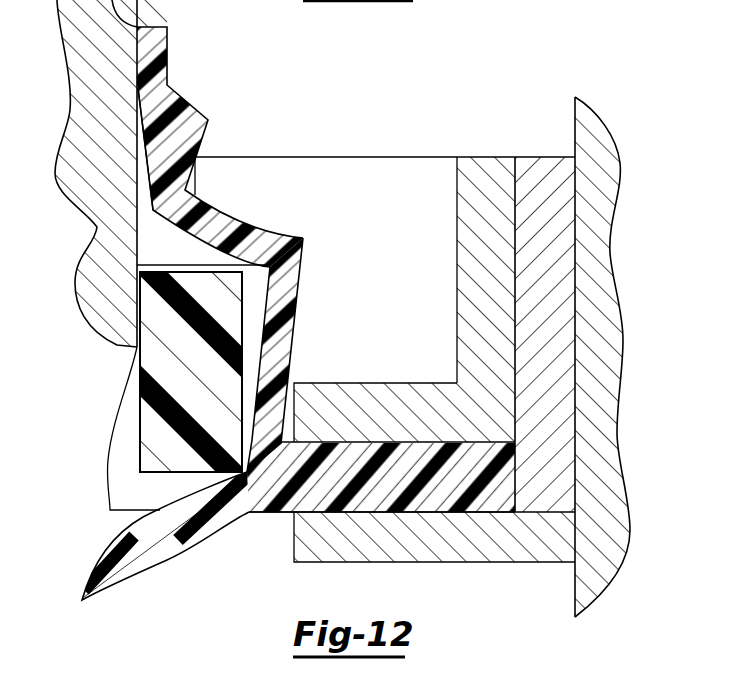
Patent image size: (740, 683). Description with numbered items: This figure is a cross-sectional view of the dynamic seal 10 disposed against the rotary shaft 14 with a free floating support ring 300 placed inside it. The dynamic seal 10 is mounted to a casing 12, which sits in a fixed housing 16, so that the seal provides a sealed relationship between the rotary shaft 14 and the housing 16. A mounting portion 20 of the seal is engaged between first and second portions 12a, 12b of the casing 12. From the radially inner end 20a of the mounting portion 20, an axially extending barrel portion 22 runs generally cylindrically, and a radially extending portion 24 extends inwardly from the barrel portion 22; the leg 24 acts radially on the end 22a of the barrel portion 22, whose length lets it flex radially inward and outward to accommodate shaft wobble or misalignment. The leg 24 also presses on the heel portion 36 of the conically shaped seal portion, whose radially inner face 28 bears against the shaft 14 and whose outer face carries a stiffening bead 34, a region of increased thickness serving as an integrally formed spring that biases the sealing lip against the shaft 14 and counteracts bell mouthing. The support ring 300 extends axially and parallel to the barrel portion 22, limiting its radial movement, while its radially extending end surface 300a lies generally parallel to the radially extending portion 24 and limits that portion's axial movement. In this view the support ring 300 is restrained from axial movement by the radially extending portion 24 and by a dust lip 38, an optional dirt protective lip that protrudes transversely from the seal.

The dynamic seal 10 is at (300, 96).
The casing 12 is at (582, 247).
The first portion of casing 12a is at (471, 232).
The second portion of casing 12b is at (535, 165).
The rotary shaft 14 is at (90, 318).
The housing 16 is at (595, 135).
The mounting portion 20 is at (408, 453).
The radially inner end of mounting portion 20a is at (258, 513).
The axially extending barrel portion 22 is at (277, 337).
The end of barrel portion 22a is at (293, 237).
The radially extending portion 24 is at (215, 212).
The radially inner face 28 is at (131, 153).
The stiffening bead 34 is at (180, 107).
The heel portion 36 is at (137, 222).
The dirt protective lip 38 is at (133, 541).
The free floating support ring 300 is at (131, 439).
The radially extending end surface 300a is at (197, 268).